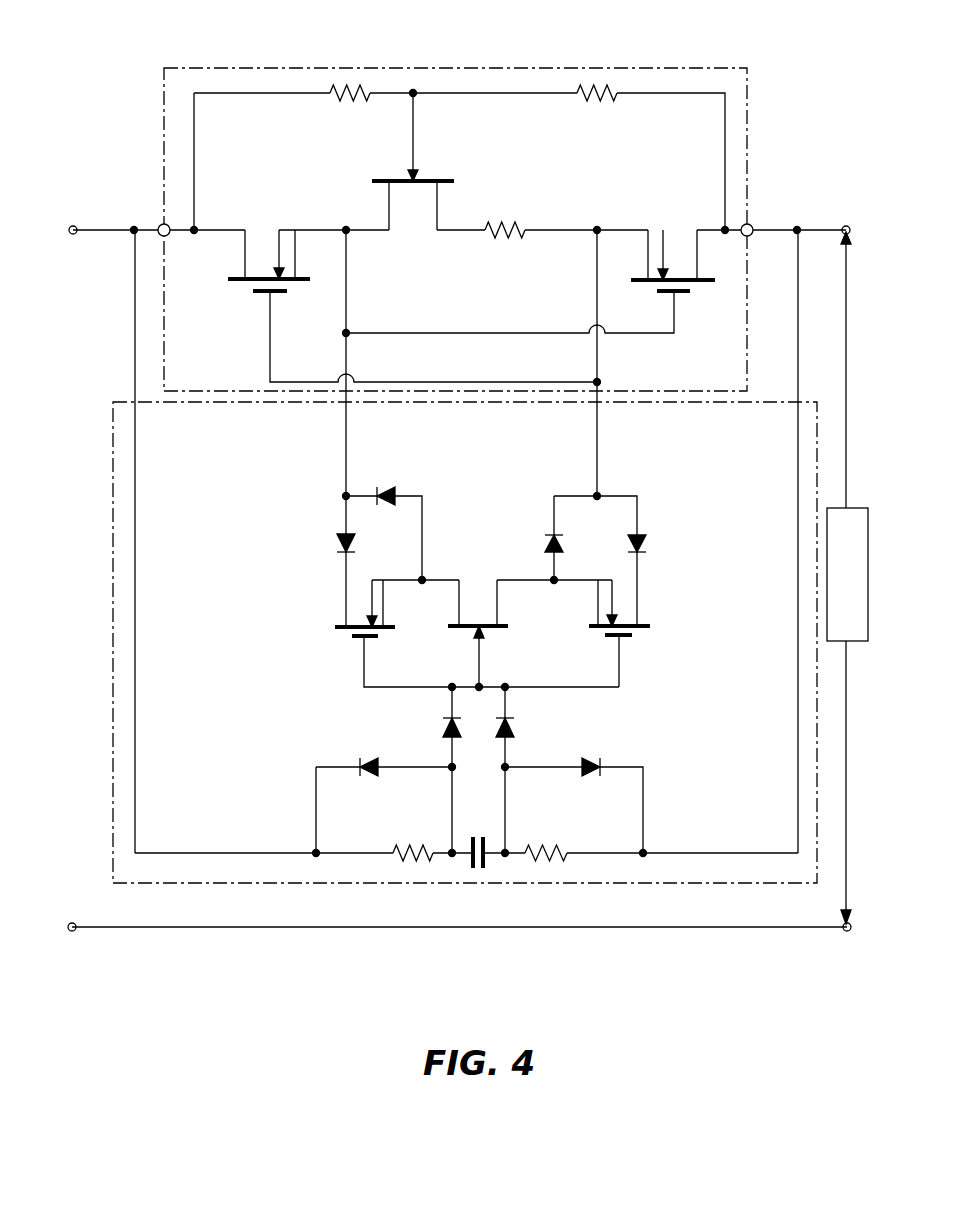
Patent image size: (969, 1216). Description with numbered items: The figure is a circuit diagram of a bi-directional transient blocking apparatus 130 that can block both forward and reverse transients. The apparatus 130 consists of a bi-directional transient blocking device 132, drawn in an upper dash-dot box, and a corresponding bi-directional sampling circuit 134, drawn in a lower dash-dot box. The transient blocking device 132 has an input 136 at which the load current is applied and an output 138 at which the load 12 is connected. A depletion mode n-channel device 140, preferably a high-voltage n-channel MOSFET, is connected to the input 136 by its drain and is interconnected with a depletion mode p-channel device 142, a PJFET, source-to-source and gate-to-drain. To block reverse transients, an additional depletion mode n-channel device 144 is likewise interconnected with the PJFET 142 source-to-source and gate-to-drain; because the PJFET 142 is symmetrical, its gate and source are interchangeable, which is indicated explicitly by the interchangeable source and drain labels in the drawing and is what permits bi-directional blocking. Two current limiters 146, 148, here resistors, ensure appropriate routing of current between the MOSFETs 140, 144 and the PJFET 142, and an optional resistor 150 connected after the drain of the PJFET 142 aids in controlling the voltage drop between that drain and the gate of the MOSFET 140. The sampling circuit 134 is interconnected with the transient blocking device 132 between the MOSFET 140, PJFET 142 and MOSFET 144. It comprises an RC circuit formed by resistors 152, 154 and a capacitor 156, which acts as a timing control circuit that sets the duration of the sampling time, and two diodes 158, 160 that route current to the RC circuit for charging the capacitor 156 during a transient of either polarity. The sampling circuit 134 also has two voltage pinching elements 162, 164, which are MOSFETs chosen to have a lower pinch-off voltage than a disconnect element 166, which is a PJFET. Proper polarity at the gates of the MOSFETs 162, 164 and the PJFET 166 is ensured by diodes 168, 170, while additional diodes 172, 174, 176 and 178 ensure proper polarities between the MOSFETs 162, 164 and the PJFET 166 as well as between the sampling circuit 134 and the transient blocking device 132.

The bi-directional apparatus 130 is at (121, 54).
The bi-directional transient blocking device 132 is at (164, 118).
The bi-directional sampling circuit 134 is at (119, 400).
The input 136 is at (162, 223).
The output 138 is at (751, 222).
The depletion mode n-channel device 140 is at (278, 228).
The depletion mode p-channel device 142 is at (419, 178).
The depletion mode n-channel device 144 is at (696, 237).
The current limiter 146 is at (332, 103).
The current limiter 148 is at (600, 102).
The resistor 150 is at (505, 252).
The resistor 152 is at (409, 846).
The resistor 154 is at (547, 846).
The capacitor 156 is at (473, 839).
The diode 158 is at (355, 762).
The diode 160 is at (603, 767).
The voltage pinching element 162 is at (335, 633).
The voltage pinching element 164 is at (650, 632).
The disconnect element 166 is at (504, 632).
The diode 168 is at (441, 720).
The diode 170 is at (516, 724).
The diode 172 is at (329, 540).
The diode 174 is at (382, 487).
The diode 176 is at (539, 538).
The diode 178 is at (648, 542).
The load 12 is at (848, 641).